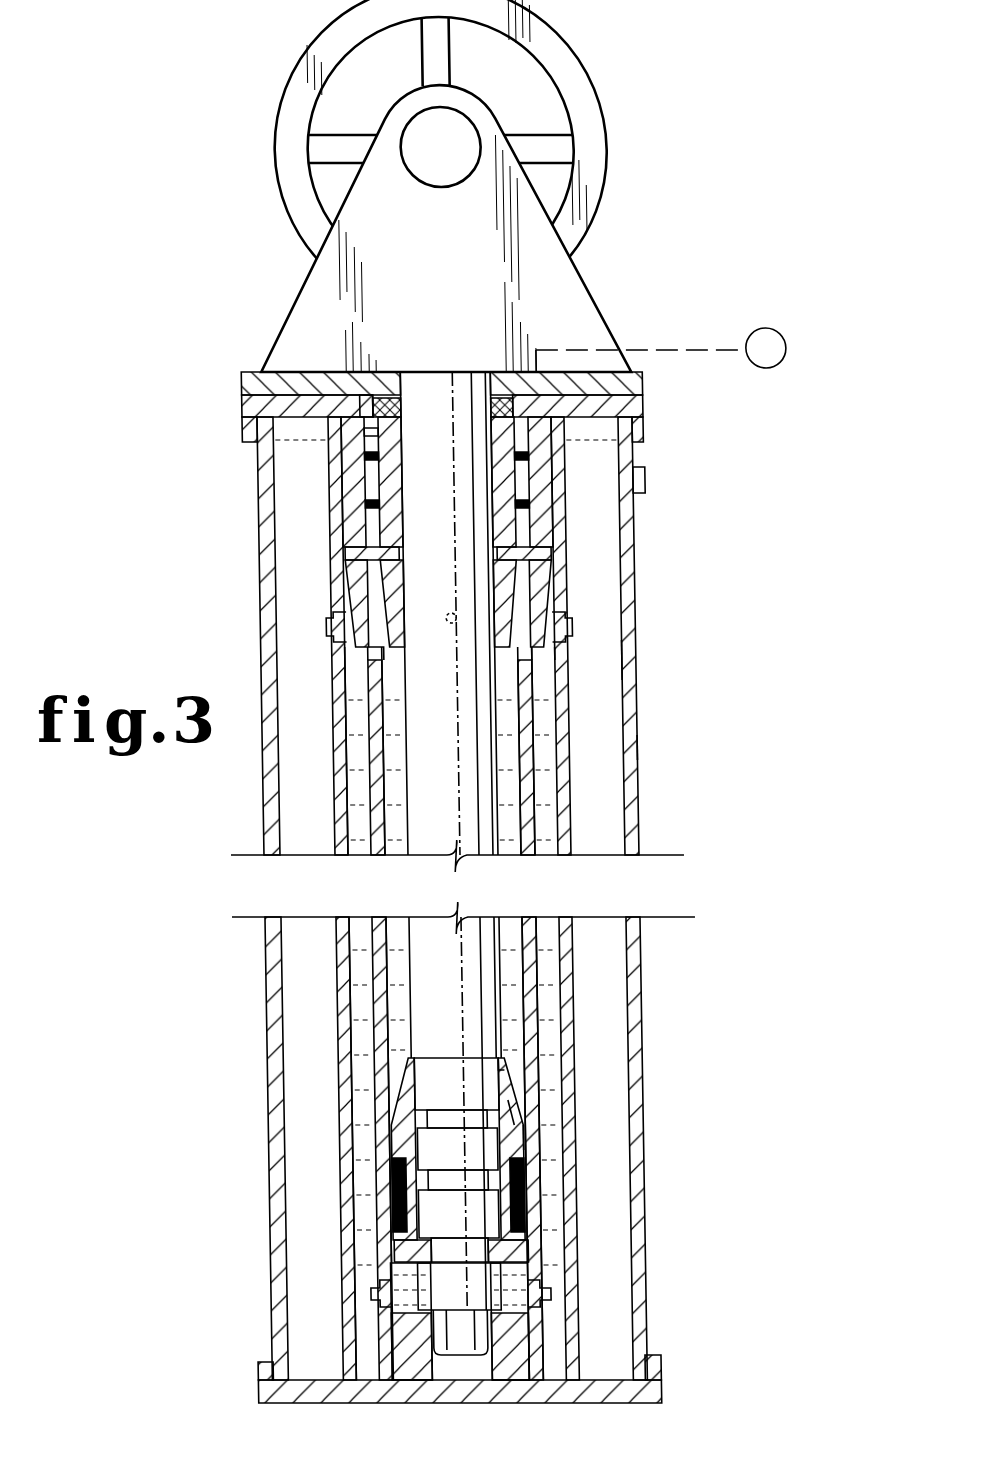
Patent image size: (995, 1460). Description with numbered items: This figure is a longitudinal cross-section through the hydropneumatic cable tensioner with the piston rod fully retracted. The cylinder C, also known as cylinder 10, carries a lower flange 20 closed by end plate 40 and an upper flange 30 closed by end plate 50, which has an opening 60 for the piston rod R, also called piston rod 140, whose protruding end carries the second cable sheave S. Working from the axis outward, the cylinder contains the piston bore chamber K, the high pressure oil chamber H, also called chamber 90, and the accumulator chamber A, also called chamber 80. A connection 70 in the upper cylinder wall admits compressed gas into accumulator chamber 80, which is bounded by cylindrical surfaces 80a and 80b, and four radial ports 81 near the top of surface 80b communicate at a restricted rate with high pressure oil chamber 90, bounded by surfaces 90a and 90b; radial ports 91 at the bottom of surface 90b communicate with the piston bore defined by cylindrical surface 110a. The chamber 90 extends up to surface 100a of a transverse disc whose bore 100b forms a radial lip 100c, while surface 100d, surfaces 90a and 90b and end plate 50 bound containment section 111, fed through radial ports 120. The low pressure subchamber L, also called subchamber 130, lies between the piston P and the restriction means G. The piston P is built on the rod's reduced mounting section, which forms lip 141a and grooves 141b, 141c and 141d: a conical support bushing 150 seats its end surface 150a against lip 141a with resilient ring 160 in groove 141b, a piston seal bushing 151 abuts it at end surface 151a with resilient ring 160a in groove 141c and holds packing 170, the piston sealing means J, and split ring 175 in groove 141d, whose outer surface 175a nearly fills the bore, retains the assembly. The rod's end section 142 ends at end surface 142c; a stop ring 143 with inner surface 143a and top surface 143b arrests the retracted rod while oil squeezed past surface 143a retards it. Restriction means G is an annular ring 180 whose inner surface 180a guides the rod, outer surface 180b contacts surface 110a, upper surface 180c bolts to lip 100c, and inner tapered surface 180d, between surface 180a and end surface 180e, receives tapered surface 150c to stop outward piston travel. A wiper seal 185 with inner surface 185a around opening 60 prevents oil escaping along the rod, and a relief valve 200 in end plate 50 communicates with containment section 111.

The cylinder 10 is at (633, 958).
The flange 20 is at (646, 1356).
The flange 30 is at (243, 428).
The end plate 40 is at (650, 1388).
The end plate 50 is at (245, 380).
The opening 60 is at (397, 372).
The connection 70 is at (645, 480).
The accumulator chamber 80 is at (596, 806).
The vertical cylindrical surface 80a is at (614, 660).
The vertical cylindrical surface 80b is at (568, 745).
The radial ports 81 is at (445, 622).
The high pressure oil chamber 90 is at (543, 826).
The vertical cylindrical surface 90a is at (568, 722).
The vertical cylindrical surface 90b is at (543, 760).
The radial ports 91 is at (535, 1288).
The surface of disc 100a is at (550, 570).
The bore 100b is at (498, 541).
The radial lip 100c is at (396, 553).
The surface 100d is at (553, 547).
The cylindrical surface 110a is at (368, 818).
The containment section 111 is at (390, 443).
The radial ports 120 is at (366, 505).
The low pressure subchamber 130 is at (390, 728).
The piston rod 140 is at (398, 735).
The lip 141a is at (495, 1057).
The circumferential groove 141b is at (504, 1102).
The circumferential groove 141c is at (514, 1200).
The circumferential groove 141d is at (388, 1232).
The end section 142 is at (461, 1284).
The end surface 142c is at (483, 1355).
The stop ring 143 is at (392, 1342).
The inner surface 143a is at (425, 1345).
The stop ring top surface 143b is at (360, 1296).
The support bushing 150 is at (391, 1089).
The end surface 150a is at (401, 1057).
The tapered surface 150c is at (513, 1122).
The piston seal bushing 151 is at (518, 1143).
The end surface 151a is at (392, 1128).
The resilient ring 160 is at (415, 1112).
The resilient ring 160a is at (408, 1179).
The packing 170 is at (388, 1200).
The split ring 175 is at (383, 1242).
The outer circumferential surface 175a is at (513, 1248).
The annular ring 180 is at (383, 658).
The inner cylindrical surface 180a is at (550, 597).
The outer surface 180b is at (373, 600).
The upper surface 180c is at (392, 545).
The inner tapered surface 180d is at (323, 640).
The end surface 180e is at (380, 652).
The wiper seal 185 is at (497, 398).
The inner surface 185a is at (399, 398).
The relief valve 200 is at (746, 344).
The second cable sheave S is at (552, 185).
The restriction means G is at (343, 582).
The high pressure oil chamber H is at (548, 669).
The piston rod R is at (436, 794).
The piston bore chamber K is at (506, 794).
The accumulator chamber A is at (596, 794).
The cylinder C is at (727, 714).
The low pressure subchamber L is at (395, 984).
The piston sealing means J is at (513, 1179).
The piston P is at (440, 1224).